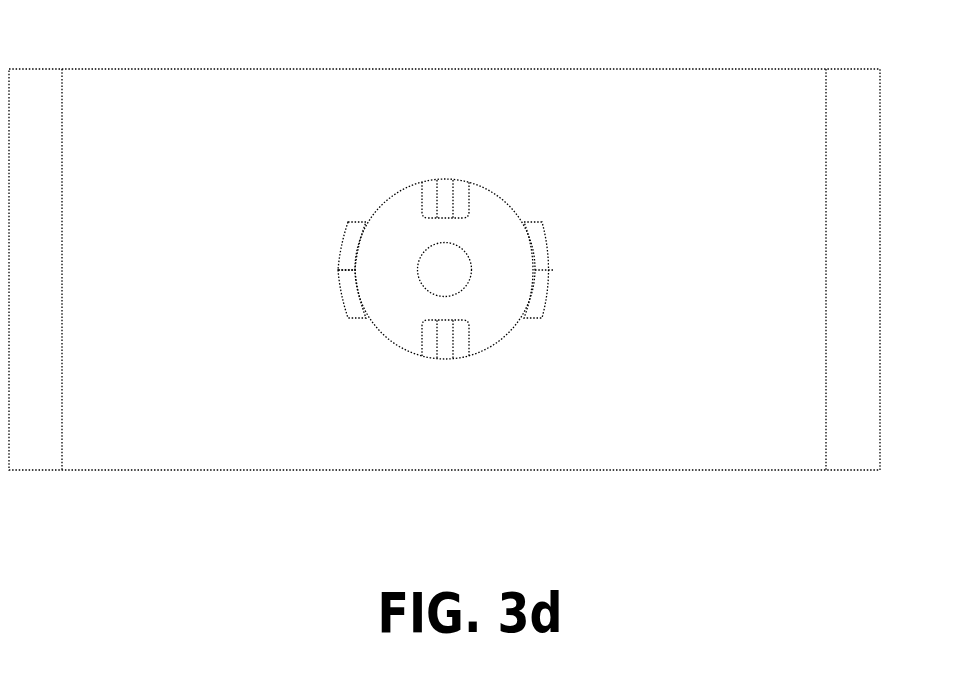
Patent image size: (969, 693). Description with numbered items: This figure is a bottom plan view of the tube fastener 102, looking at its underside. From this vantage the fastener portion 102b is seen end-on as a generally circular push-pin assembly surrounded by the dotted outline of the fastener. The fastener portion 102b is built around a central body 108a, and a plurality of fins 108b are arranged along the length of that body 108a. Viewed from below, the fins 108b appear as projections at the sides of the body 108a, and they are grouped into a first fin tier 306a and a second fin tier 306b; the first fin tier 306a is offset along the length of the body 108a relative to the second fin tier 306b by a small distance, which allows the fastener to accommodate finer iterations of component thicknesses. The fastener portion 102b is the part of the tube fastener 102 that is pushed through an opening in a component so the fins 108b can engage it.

The tube fastener 102 is at (65, 35).
The fastener portion 102b is at (373, 269).
The body 108a is at (500, 337).
The plurality of fins 108b is at (262, 279).
The first fin tier 306a is at (333, 225).
The second fin tier 306b is at (311, 298).